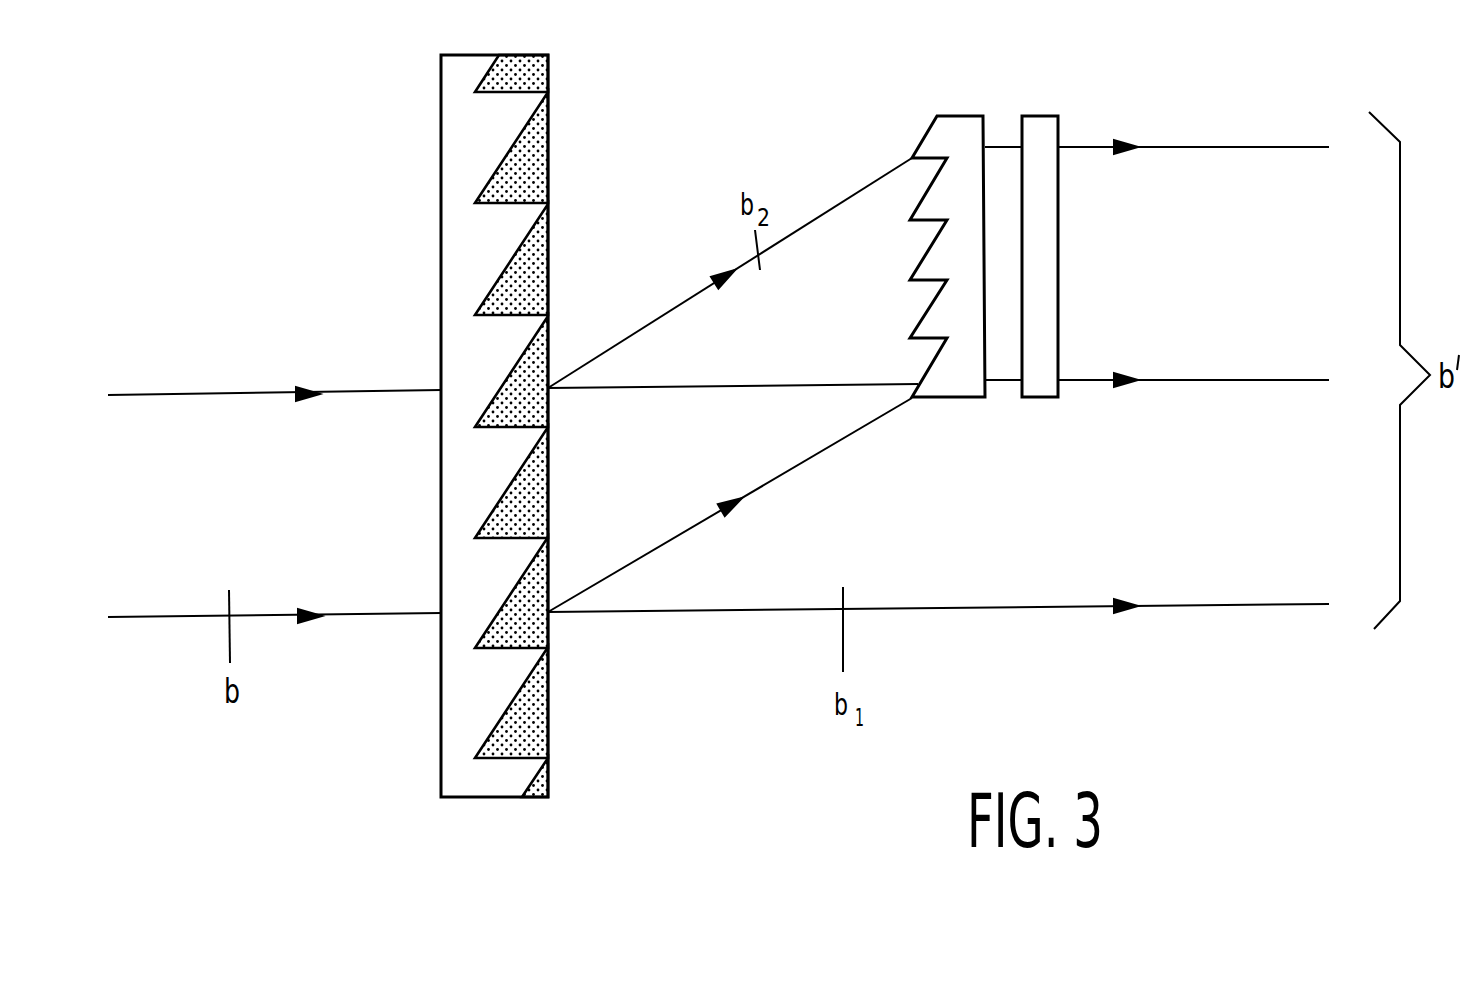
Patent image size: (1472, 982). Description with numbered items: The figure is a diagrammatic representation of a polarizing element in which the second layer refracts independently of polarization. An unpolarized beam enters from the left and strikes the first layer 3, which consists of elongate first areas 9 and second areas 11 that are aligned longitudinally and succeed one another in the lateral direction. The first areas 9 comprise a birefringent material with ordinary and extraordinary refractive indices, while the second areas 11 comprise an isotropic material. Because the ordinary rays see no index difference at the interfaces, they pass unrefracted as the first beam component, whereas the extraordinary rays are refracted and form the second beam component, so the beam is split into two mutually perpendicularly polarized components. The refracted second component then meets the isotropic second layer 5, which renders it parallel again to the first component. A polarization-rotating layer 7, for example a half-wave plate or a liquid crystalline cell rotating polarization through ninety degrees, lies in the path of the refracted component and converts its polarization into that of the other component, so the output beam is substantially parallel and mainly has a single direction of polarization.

The first layer 3 is at (473, 797).
The second layer 5 is at (954, 116).
The polarization-rotating layer 7 is at (1038, 116).
The first areas 9 is at (543, 630).
The second areas 11 is at (458, 711).